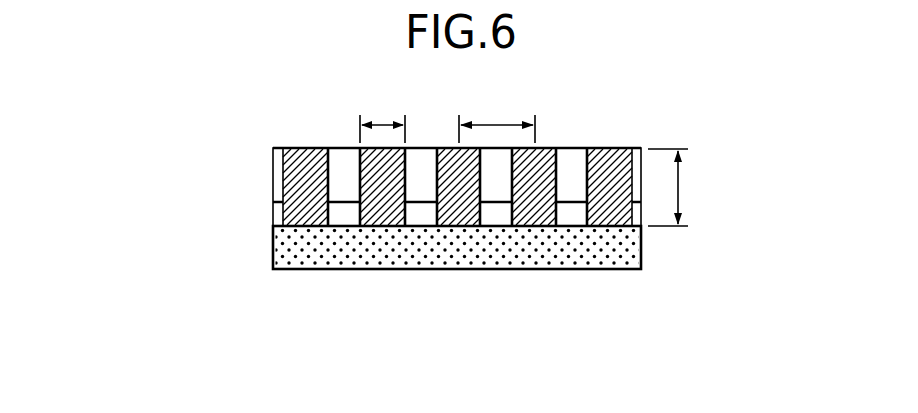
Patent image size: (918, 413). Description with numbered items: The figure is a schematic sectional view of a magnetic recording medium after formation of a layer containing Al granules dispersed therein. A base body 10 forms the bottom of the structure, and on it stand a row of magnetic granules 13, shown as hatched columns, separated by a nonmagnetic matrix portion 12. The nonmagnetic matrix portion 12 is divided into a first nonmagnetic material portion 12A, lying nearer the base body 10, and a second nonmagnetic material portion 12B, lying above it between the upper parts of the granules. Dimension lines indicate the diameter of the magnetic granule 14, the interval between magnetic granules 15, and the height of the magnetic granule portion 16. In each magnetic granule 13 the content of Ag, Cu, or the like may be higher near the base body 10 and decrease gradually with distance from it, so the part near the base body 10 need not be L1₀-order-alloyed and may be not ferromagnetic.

The base body 10 is at (607, 270).
The nonmagnetic matrix portion 12 is at (190, 150).
The first nonmagnetic material portion 12A is at (277, 212).
The second nonmagnetic material portion 12B is at (277, 172).
The magnetic granule 13 is at (303, 148).
The diameter of the magnetic granule 14 is at (384, 125).
The interval between magnetic granules 15 is at (496, 125).
The height of the magnetic granule portion 16 is at (680, 188).